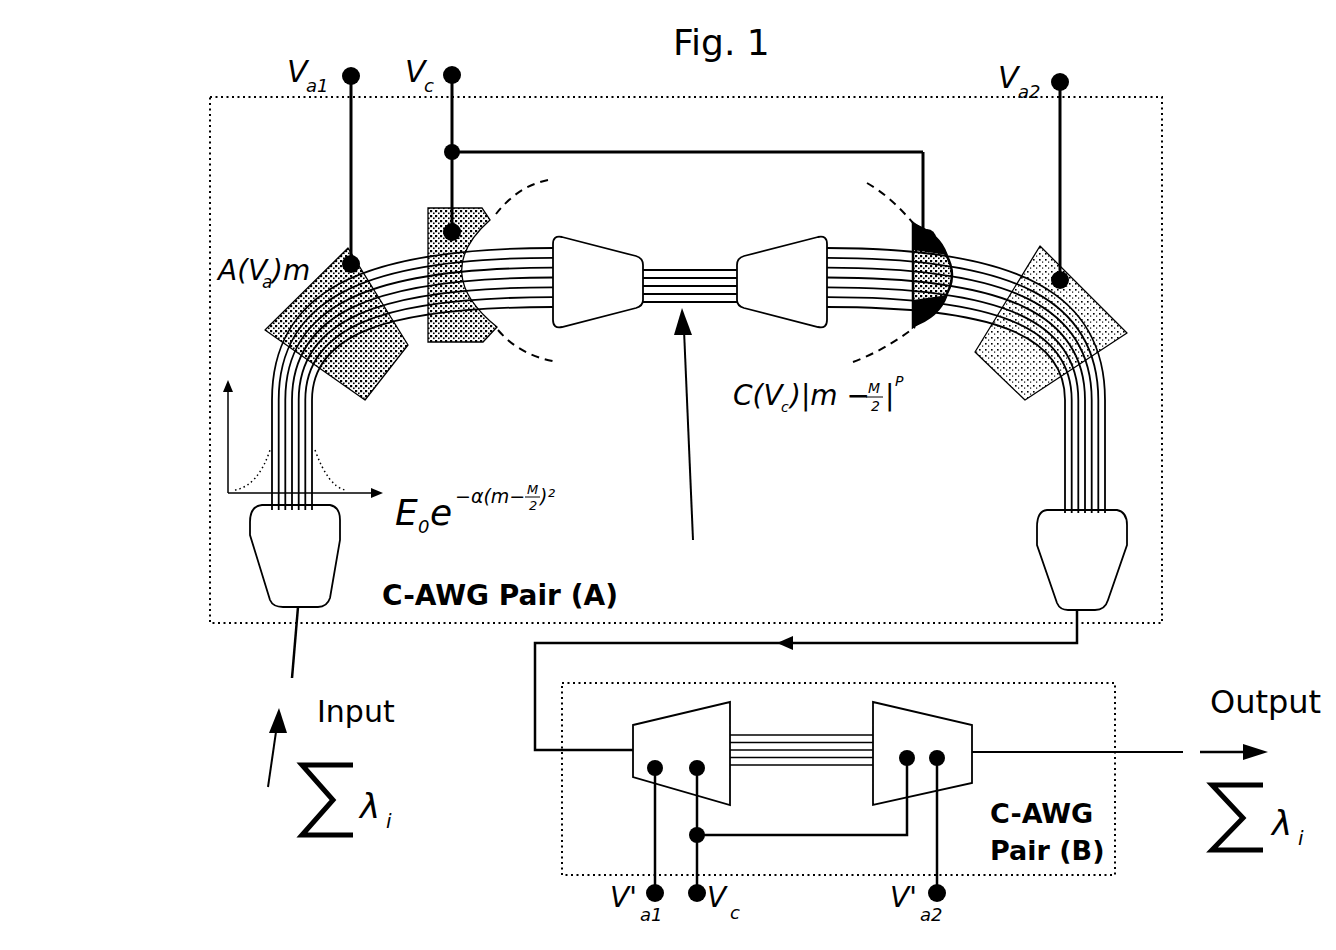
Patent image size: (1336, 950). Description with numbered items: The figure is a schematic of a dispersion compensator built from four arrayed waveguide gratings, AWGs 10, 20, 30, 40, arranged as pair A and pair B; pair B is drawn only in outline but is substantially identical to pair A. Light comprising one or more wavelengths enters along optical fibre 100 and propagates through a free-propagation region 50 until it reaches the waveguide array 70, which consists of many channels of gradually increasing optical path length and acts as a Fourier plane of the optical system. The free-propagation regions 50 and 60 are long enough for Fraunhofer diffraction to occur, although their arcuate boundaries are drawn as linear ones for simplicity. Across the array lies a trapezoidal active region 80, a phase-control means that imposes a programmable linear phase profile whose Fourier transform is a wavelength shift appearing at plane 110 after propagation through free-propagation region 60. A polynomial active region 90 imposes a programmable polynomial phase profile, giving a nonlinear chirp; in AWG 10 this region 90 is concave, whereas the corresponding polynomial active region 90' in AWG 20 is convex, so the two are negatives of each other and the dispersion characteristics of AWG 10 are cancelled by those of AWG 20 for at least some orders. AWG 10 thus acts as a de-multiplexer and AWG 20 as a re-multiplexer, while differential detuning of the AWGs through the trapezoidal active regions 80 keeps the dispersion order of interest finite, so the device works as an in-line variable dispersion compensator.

The first AWG 10 is at (300, 219).
The second AWG 20 is at (1088, 203).
The third AWG 30 is at (625, 786).
The fourth AWG 40 is at (992, 718).
The free-propagation region 50 is at (688, 557).
The free-propagation region 60 is at (690, 282).
The waveguide array 70 is at (405, 255).
The trapezoidal active region 80 is at (372, 395).
The polynomial active region 90 is at (543, 263).
The polynomial active region 90' is at (859, 263).
The optical fibre 100 is at (287, 655).
The plane 110 is at (704, 439).